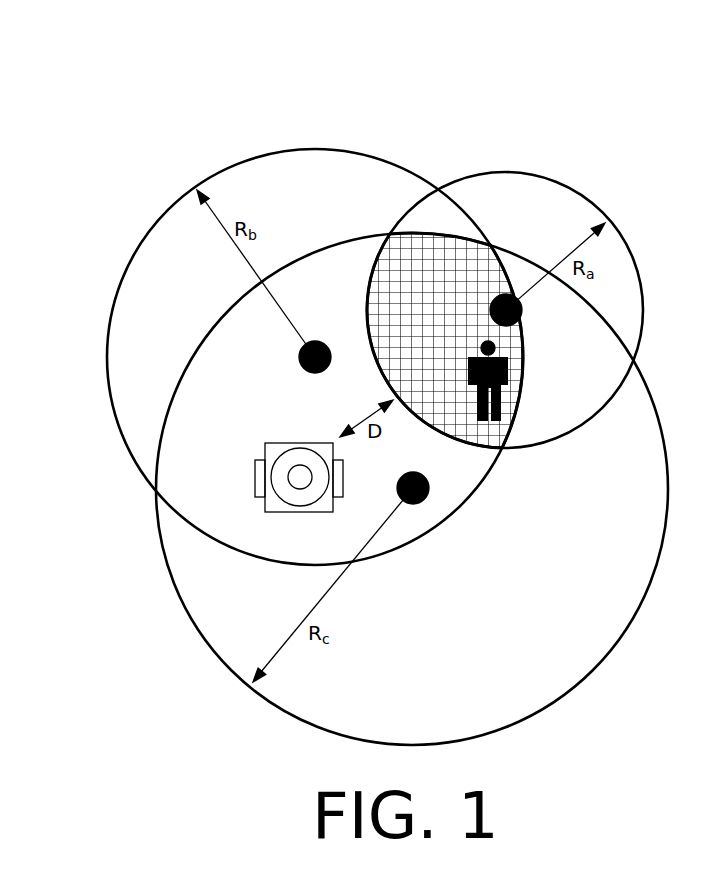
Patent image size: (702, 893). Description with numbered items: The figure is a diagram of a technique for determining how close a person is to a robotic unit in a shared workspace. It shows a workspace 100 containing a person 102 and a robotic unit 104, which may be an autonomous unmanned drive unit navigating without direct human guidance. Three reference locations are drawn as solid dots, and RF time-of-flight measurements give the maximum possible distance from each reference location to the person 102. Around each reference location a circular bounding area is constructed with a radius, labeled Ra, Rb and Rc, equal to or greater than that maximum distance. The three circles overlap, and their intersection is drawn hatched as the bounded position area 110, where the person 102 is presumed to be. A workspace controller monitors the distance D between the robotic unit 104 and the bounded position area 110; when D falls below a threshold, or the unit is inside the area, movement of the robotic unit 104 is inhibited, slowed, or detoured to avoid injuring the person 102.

The workspace 100 is at (178, 100).
The person 102 is at (510, 360).
The robotic unit 104 is at (282, 447).
The bounded position area 110 is at (388, 289).